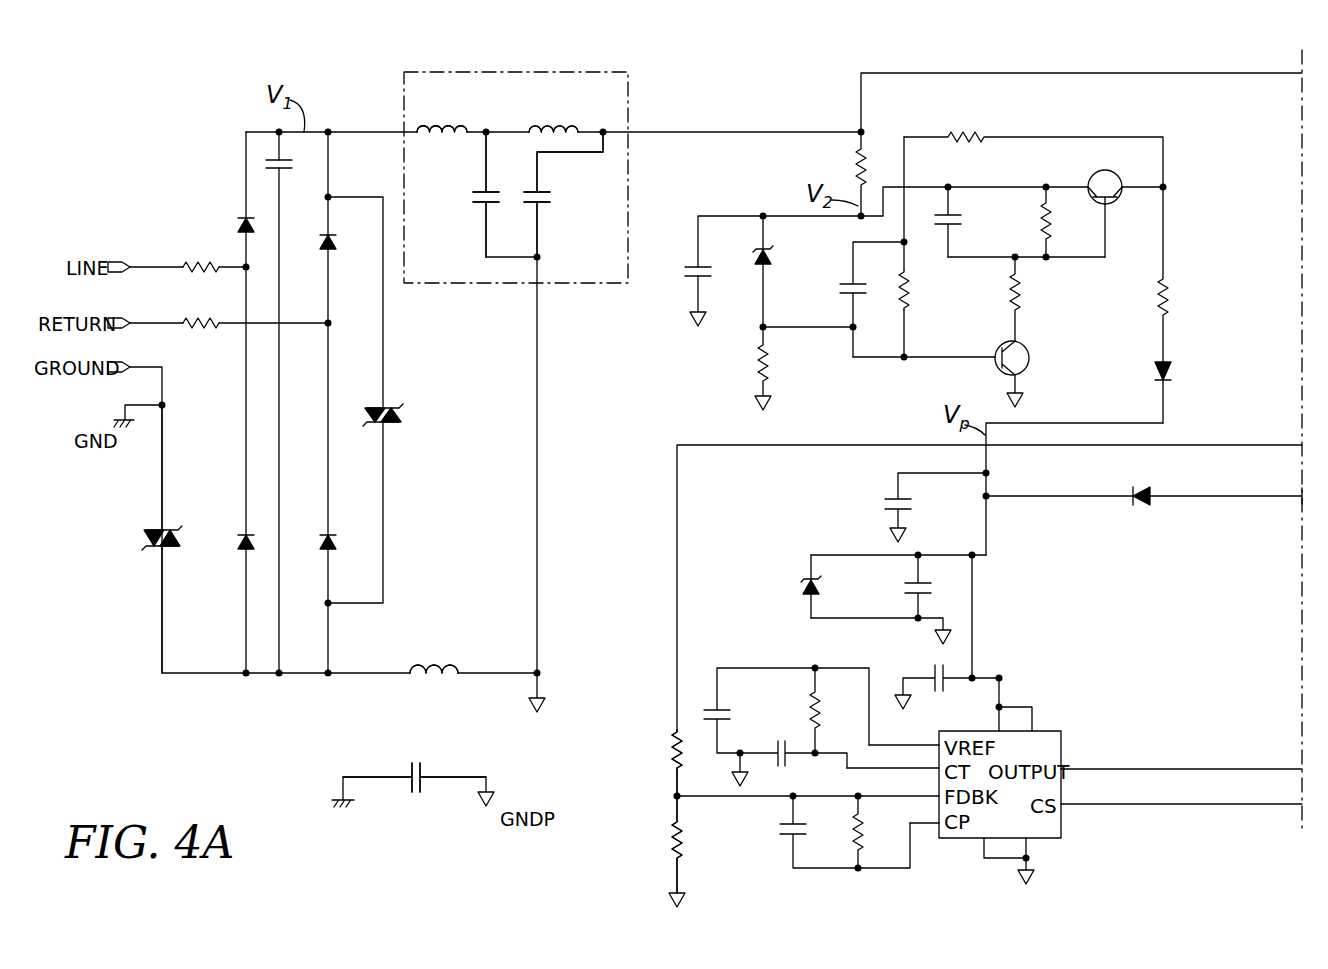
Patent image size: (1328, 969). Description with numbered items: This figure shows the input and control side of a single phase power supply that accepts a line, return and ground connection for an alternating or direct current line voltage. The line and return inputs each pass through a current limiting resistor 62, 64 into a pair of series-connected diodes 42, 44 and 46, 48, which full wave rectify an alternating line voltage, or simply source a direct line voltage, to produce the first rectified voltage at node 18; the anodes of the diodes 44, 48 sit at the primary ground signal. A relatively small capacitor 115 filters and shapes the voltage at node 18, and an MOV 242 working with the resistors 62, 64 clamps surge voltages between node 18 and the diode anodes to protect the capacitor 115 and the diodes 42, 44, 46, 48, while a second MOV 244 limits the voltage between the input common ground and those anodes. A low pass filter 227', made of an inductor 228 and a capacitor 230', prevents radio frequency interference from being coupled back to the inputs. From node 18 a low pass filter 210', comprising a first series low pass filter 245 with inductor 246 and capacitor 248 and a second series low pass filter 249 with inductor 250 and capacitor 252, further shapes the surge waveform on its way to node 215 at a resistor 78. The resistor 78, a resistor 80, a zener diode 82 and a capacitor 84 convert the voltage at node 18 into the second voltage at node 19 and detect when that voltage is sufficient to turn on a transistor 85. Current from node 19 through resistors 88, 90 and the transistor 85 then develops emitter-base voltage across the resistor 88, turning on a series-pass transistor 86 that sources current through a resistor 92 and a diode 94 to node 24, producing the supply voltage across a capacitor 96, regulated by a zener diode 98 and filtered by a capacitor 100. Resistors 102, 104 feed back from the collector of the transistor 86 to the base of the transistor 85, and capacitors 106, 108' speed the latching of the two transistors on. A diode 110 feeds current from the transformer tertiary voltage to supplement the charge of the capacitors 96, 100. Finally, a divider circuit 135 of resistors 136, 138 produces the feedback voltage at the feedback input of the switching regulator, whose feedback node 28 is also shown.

The node 18 is at (328, 132).
The node 19 is at (858, 220).
The node 24 is at (989, 473).
The feedback node 28 is at (670, 799).
The diode 42 is at (243, 218).
The diode 44 is at (242, 551).
The diode 46 is at (322, 250).
The diode 48 is at (336, 536).
The current limiting resistor 62 is at (191, 262).
The current limiting resistor 64 is at (210, 323).
The resistor 78 is at (856, 171).
The resistor 80 is at (770, 371).
The zener diode 82 is at (760, 274).
The capacitor 84 is at (702, 267).
The transistor 85 is at (1029, 368).
The series-pass transistor 86 is at (1102, 180).
The resistor 88 is at (1053, 224).
The resistor 90 is at (1023, 295).
The resistor 92 is at (1172, 294).
The diode 94 is at (1168, 372).
The capacitor 96 is at (884, 511).
The zener diode 98 is at (799, 592).
The capacitor 100 is at (902, 593).
The resistor 102 is at (962, 132).
The resistor 104 is at (909, 299).
The capacitor 106 is at (840, 297).
The capacitor 108' is at (985, 222).
The diode 110 is at (1147, 506).
The capacitor 115 is at (291, 171).
The divider circuit 135 is at (638, 862).
The resistor 136 is at (665, 745).
The resistor 138 is at (683, 841).
The low pass filter 210' is at (557, 173).
The node 215 is at (858, 129).
The low pass filter 227' is at (411, 728).
The inductor 228 is at (432, 665).
The capacitor 230' is at (413, 805).
The MOV 242 is at (390, 426).
The MOV 244 is at (153, 529).
The first series low pass filter 245 is at (466, 228).
The inductor 246 is at (437, 126).
The capacitor 248 is at (478, 191).
The second series low pass filter 249 is at (557, 216).
The inductor 250 is at (547, 126).
The capacitor 252 is at (549, 195).